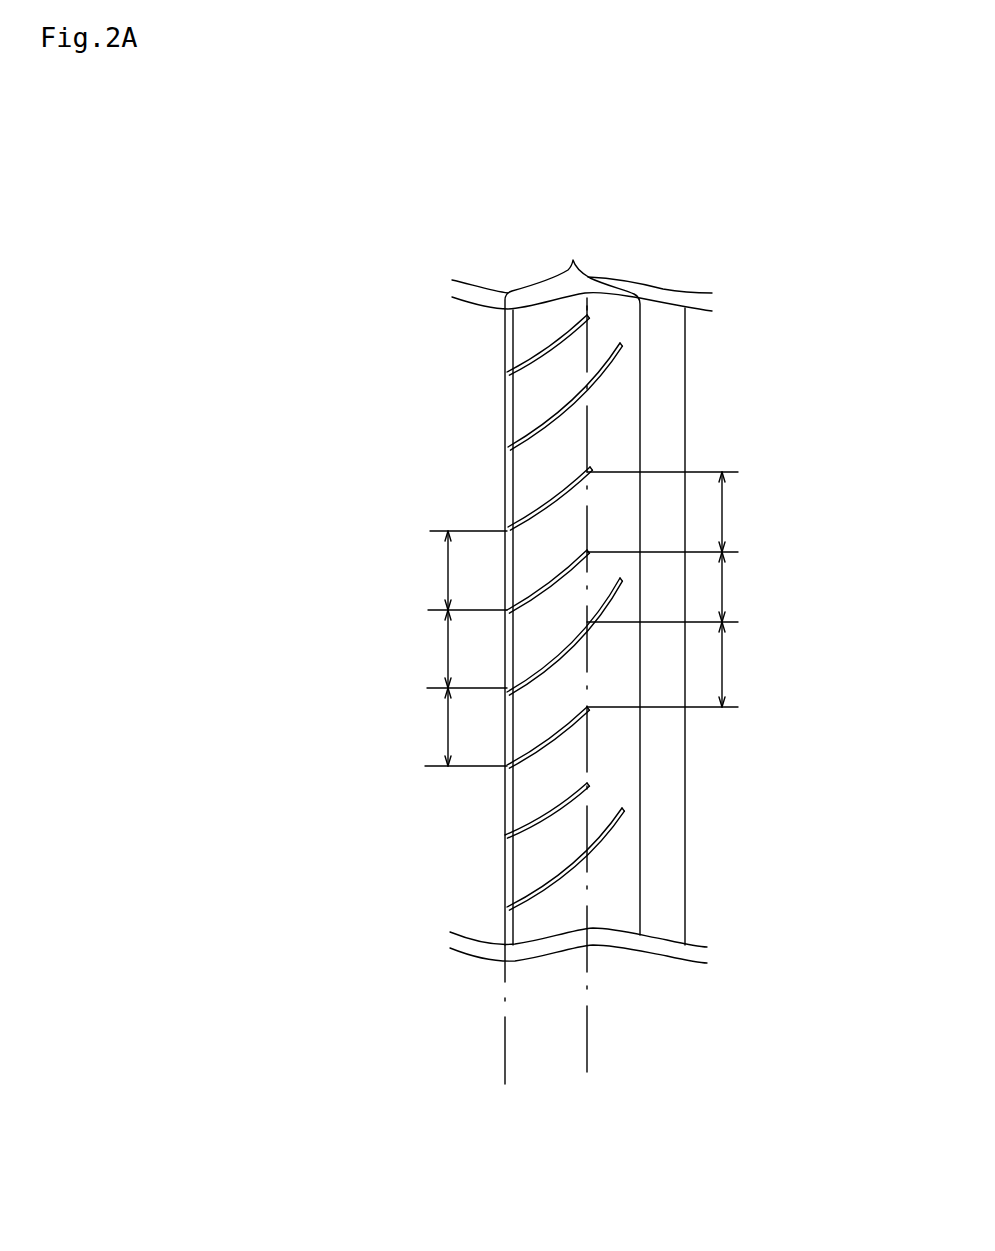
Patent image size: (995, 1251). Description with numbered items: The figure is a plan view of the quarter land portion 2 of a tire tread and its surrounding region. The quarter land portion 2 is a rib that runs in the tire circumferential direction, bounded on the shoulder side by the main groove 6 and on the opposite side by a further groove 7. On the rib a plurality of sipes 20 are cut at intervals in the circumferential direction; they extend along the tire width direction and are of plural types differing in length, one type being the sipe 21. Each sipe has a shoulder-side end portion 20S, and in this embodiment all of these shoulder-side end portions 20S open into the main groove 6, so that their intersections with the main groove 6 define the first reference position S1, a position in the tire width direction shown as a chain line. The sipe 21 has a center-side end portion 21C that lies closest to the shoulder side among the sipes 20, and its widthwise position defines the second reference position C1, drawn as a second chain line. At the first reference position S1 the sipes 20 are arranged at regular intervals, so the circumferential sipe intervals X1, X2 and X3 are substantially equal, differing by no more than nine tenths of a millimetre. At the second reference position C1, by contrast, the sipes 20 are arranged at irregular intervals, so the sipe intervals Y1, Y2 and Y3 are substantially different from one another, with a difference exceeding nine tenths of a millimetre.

The quarter land portion 2 is at (582, 583).
The main groove 6 is at (488, 350).
The second region 7 is at (663, 350).
The sipes 20 is at (487, 612).
The sipe 21 is at (560, 728).
The shoulder-side end portion 20S is at (507, 452).
The center-side end portion 21C is at (585, 472).
The first reference position S1 is at (507, 1018).
The second reference position C1 is at (585, 1012).
The sipe interval X1 is at (460, 570).
The sipe interval X2 is at (460, 649).
The sipe interval X3 is at (460, 727).
The sipe interval Y1 is at (672, 512).
The sipe interval Y2 is at (672, 587).
The sipe interval Y3 is at (672, 664).